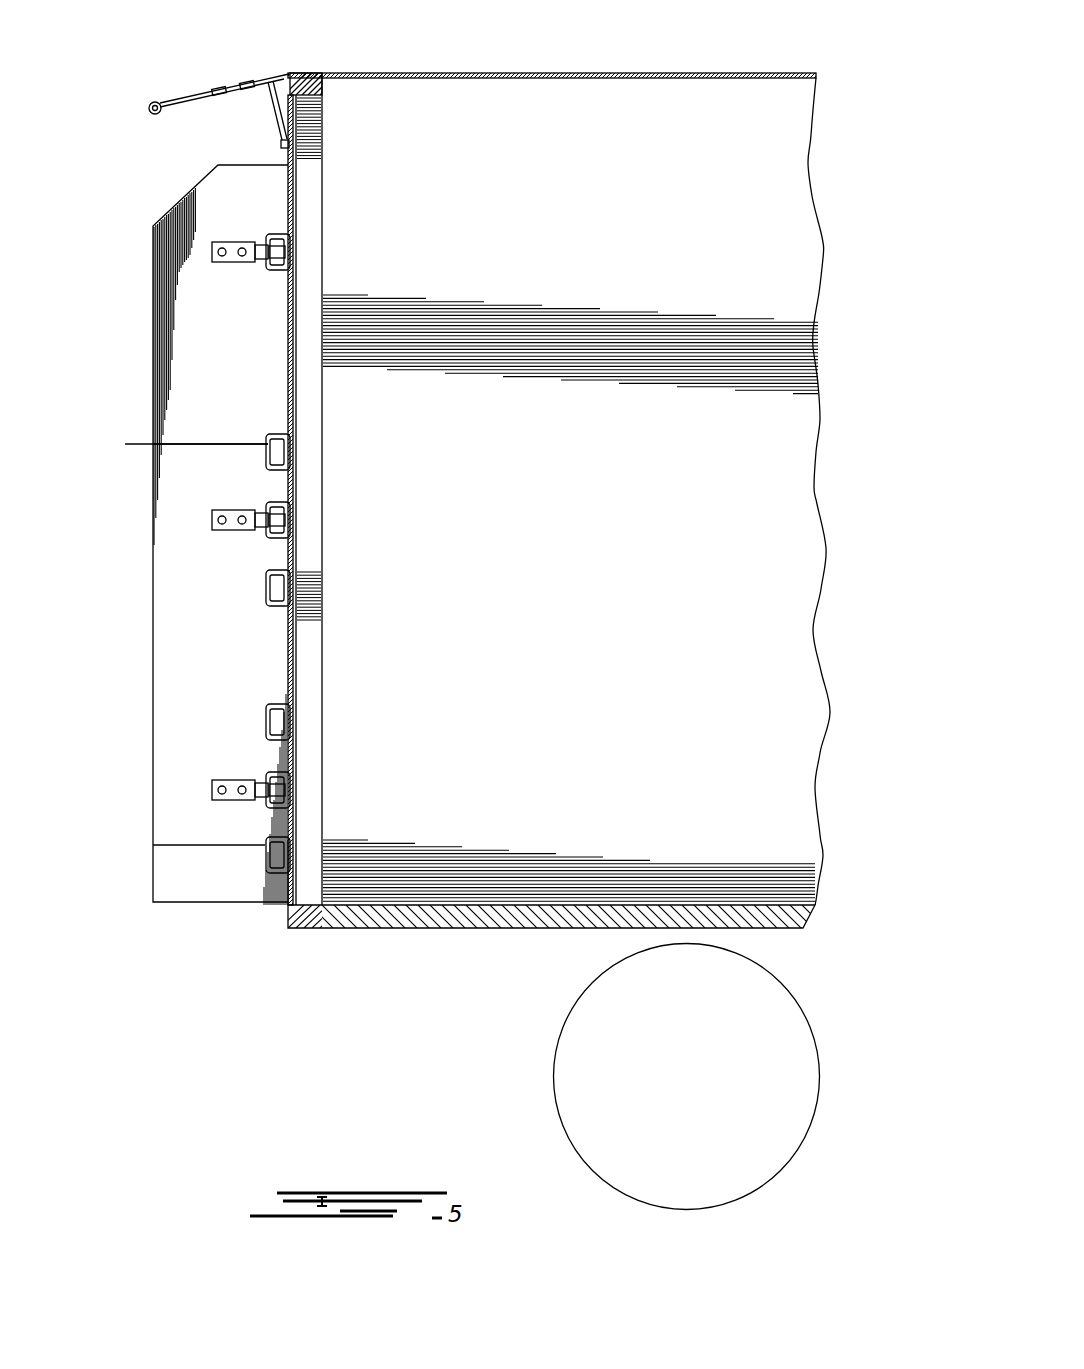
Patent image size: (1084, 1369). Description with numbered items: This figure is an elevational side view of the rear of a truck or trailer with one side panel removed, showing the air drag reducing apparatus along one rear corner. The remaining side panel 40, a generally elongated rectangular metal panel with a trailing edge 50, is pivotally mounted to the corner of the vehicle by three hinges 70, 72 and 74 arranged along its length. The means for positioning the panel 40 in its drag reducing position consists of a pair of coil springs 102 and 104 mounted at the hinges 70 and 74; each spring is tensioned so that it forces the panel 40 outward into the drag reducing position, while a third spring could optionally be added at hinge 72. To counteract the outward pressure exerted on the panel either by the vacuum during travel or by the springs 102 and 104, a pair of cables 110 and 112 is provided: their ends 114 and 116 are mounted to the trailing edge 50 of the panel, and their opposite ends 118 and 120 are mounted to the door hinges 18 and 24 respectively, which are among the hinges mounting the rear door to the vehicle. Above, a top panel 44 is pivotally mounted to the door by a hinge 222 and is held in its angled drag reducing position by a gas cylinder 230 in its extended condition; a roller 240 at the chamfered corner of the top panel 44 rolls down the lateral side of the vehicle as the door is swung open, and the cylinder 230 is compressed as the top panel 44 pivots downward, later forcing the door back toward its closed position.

The top panel 44 is at (196, 84).
The roller 240 is at (150, 104).
The gas cylinder 230 is at (272, 100).
The hinge 222 is at (297, 98).
The hinge 70 is at (240, 240).
The coil spring 102 is at (286, 252).
The side panel 40 is at (200, 318).
The cable 110 is at (200, 443).
The cable end 114 is at (145, 445).
The cable end 118 is at (290, 500).
The door hinge 18 is at (286, 522).
The hinge 72 is at (215, 532).
The trailing edge 50 is at (150, 722).
The coil spring 104 is at (290, 782).
The cable end 120 is at (290, 848).
The hinge 74 is at (230, 795).
The cable end 116 is at (153, 846).
The cable 112 is at (200, 846).
The door hinge 24 is at (270, 858).